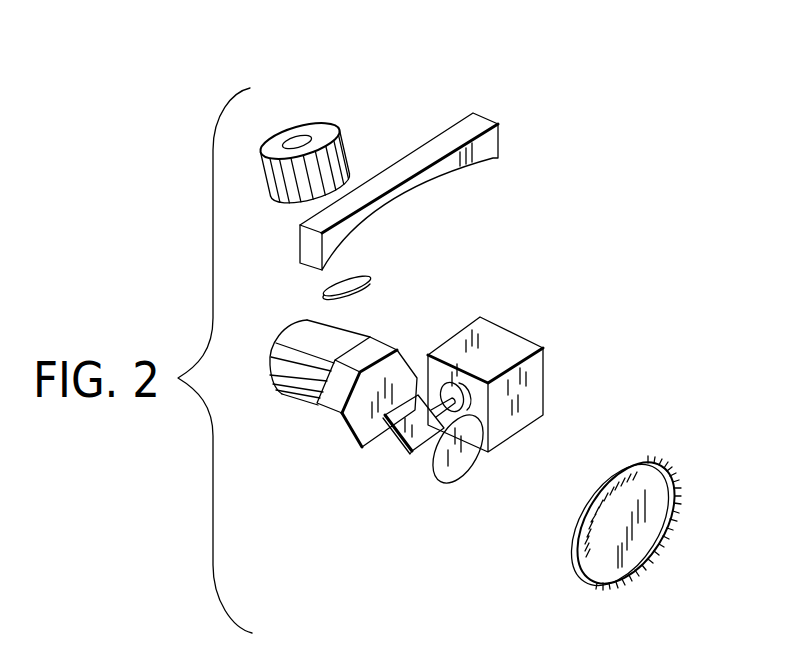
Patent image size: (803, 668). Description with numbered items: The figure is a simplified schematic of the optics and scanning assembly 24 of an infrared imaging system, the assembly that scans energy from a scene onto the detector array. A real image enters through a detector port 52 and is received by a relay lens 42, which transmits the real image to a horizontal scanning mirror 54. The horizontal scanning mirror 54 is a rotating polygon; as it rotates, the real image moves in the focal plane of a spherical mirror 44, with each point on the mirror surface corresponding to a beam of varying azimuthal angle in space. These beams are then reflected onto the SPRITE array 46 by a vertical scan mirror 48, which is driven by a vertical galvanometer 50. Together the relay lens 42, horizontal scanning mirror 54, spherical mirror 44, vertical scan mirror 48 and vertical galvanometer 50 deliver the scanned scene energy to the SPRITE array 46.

The optics and scanning assembly 24 is at (392, 110).
The relay lens 42 is at (323, 292).
The spherical mirror 44 is at (488, 142).
The SPRITE array 46 is at (578, 560).
The vertical scan mirror 48 is at (399, 447).
The vertical galvanometer 50 is at (545, 377).
The detector port 52 is at (267, 186).
The horizontal scanning mirror 54 is at (335, 427).